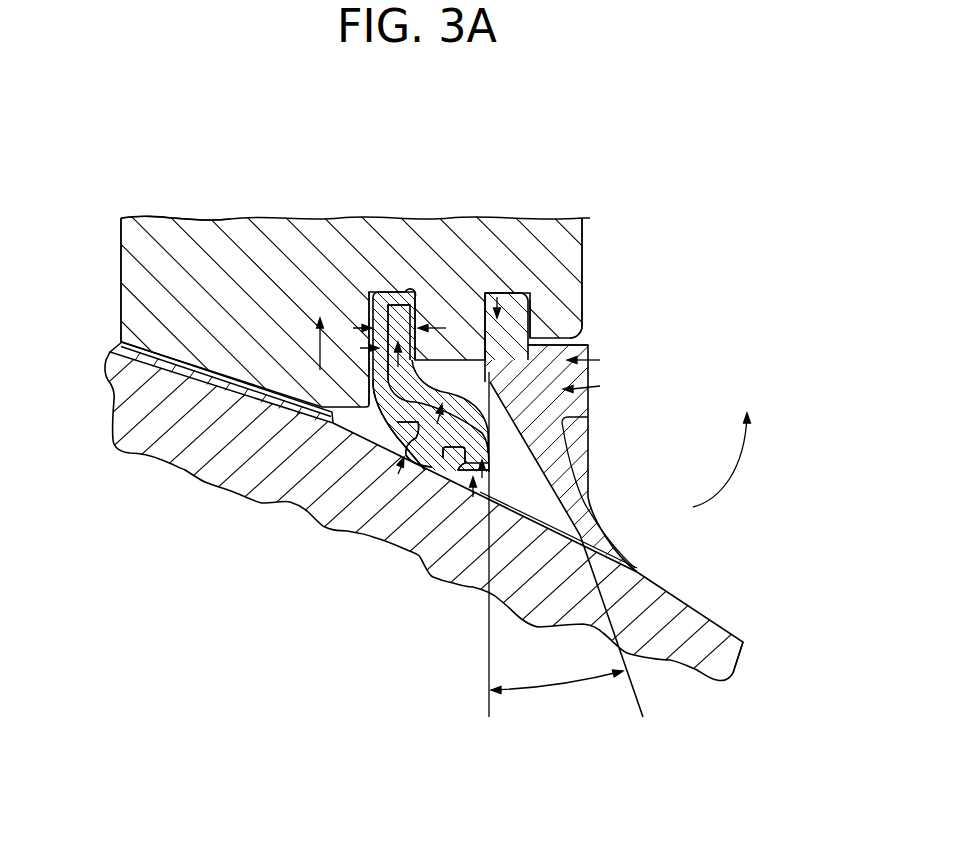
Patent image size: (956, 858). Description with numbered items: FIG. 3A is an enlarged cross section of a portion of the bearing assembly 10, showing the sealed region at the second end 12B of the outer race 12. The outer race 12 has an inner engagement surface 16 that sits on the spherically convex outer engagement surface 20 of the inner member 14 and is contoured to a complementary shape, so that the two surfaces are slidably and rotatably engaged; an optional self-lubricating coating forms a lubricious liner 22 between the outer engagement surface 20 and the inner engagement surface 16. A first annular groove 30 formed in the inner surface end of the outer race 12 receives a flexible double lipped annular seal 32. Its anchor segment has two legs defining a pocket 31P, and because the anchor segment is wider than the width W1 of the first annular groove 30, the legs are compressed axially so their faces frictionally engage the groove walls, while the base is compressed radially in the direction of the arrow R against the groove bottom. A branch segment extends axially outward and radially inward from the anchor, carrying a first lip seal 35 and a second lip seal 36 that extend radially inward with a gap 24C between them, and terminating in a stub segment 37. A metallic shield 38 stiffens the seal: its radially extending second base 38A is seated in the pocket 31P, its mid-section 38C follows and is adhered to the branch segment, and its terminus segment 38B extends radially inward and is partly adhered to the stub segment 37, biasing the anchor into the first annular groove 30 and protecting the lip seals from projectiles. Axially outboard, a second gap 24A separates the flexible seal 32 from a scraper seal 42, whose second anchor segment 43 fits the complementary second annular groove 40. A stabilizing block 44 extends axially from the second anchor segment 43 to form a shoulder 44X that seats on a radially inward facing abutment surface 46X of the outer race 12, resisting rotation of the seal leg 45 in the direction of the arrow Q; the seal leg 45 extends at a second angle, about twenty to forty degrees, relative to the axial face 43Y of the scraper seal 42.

The bearing assembly 10 is at (135, 185).
The outer race 12 is at (568, 246).
The second end 12B is at (601, 272).
The inner member 14 is at (738, 675).
The inner engagement surface 16 is at (243, 345).
The outer engagement surface 20 is at (713, 621).
The lubricious liner 22 is at (225, 378).
The first annular groove 30 is at (412, 292).
The pocket 31P is at (389, 304).
The flexible double lipped annular seal 32 is at (362, 342).
The first lip seal 35 is at (402, 460).
The second lip seal 36 is at (452, 456).
The stub segment 37 is at (465, 448).
The metallic shield 38 is at (426, 462).
The second base 38A is at (395, 437).
The terminus segment 38B is at (468, 490).
The mid-section 38C is at (440, 462).
The second gap 24A is at (473, 500).
The gap 24C is at (408, 424).
The second annular groove 40 is at (530, 296).
The scraper seal 42 is at (600, 386).
The second anchor segment 43 is at (497, 297).
The axial face 43Y is at (487, 299).
The stabilizing block 44 is at (600, 360).
The shoulder 44X is at (567, 338).
The seal leg 45 is at (576, 506).
The abutment surface 46X is at (546, 344).
The width of the first annular groove W1 is at (446, 328).
The radial compression direction arrow R is at (330, 358).
The rotation direction arrow Q is at (733, 473).